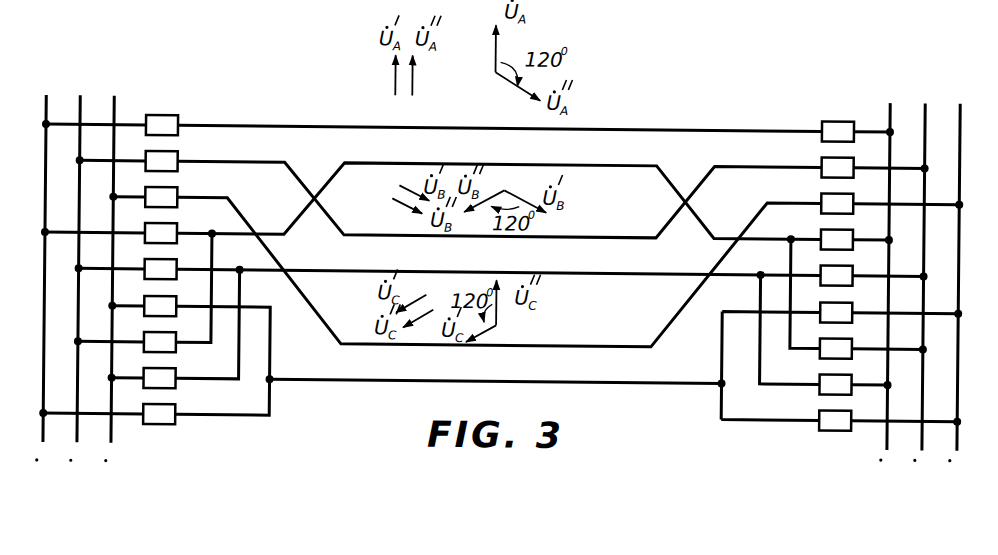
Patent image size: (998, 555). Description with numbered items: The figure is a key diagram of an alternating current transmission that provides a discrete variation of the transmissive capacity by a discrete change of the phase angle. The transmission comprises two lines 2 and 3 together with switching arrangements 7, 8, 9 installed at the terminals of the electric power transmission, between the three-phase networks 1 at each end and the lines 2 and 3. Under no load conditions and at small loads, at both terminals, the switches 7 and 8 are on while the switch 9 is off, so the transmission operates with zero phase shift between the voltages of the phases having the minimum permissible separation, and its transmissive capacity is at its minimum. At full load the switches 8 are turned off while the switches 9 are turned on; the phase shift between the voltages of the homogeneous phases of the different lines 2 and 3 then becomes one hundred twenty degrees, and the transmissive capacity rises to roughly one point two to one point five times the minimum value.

The three-phase network 1 is at (111, 300).
The line 2 is at (339, 126).
The line 3 is at (349, 164).
The switching arrangement 7 is at (170, 196).
The switching arrangement 8 is at (168, 303).
The switching arrangement 9 is at (165, 413).